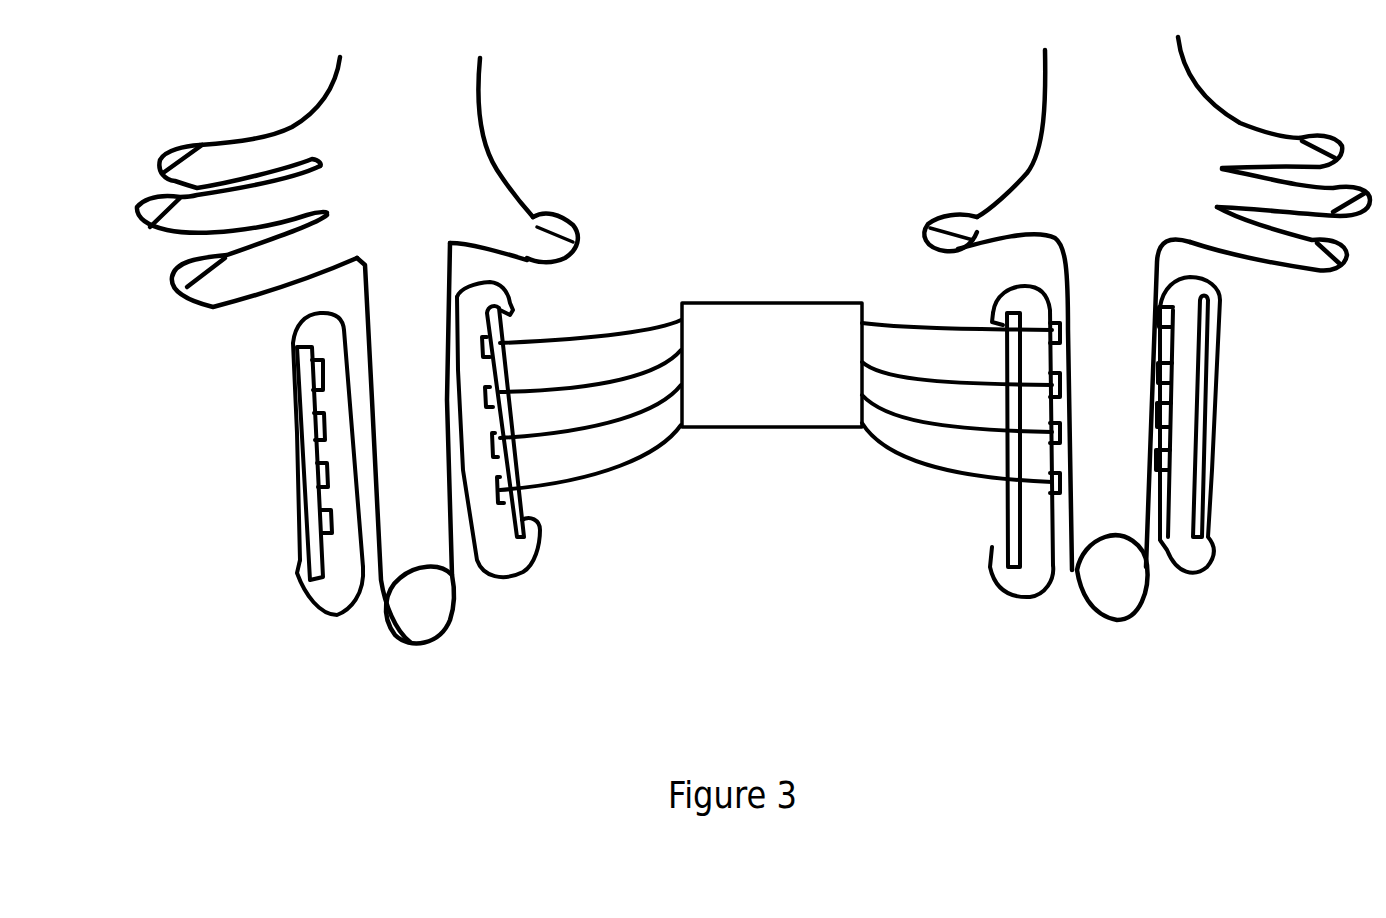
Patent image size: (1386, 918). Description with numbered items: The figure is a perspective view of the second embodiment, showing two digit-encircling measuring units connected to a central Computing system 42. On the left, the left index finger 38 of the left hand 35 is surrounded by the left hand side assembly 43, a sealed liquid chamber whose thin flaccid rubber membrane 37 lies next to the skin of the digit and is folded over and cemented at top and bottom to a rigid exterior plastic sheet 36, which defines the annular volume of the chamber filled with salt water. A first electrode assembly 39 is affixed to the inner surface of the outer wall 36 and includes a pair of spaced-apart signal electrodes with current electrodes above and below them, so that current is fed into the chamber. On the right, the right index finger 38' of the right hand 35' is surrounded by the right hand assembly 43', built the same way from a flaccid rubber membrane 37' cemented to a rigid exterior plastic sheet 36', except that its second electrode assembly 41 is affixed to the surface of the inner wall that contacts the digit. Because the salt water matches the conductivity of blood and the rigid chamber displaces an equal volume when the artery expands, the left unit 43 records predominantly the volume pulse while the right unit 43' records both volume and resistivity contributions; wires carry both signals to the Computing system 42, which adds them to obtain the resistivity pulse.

The left hand 35 is at (575, 137).
The right hand 35' is at (956, 133).
The flaccid rubber membrane 37 is at (605, 209).
The flaccid rubber membrane 37' is at (890, 202).
The rigid exterior plastic sheet 36 is at (291, 529).
The rigid exterior plastic sheet 36' is at (1246, 500).
The first electrode assembly 39 is at (500, 505).
The second electrode assembly 41 is at (1055, 490).
The left index finger 38 is at (394, 669).
The right index finger 38' is at (1155, 630).
The computing system 42 is at (773, 387).
The left hand side assembly 43 is at (319, 666).
The right hand side assembly 43' is at (981, 654).